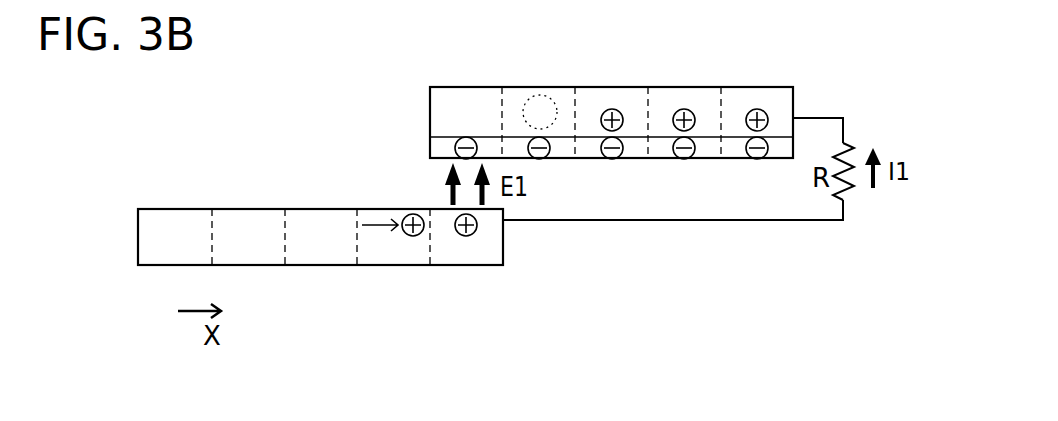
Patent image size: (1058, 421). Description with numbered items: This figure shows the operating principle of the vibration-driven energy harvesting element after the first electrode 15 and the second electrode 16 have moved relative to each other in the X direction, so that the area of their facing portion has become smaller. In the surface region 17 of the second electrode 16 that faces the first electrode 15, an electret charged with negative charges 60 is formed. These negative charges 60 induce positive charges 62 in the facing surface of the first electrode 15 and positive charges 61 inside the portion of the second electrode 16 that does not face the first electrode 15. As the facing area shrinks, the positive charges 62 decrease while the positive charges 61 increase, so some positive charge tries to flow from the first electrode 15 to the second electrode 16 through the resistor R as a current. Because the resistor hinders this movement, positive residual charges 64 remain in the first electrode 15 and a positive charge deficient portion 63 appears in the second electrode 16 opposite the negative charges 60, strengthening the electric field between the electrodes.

The first electrode 15 is at (262, 250).
The second electrode 16 is at (465, 95).
The surface region 17 is at (437, 147).
The negative charges 60 is at (620, 152).
The positive charges 61 is at (672, 108).
The positive charges 62 is at (477, 230).
The positive charge deficient portion 63 is at (532, 97).
The positive residual charges 64 is at (417, 237).